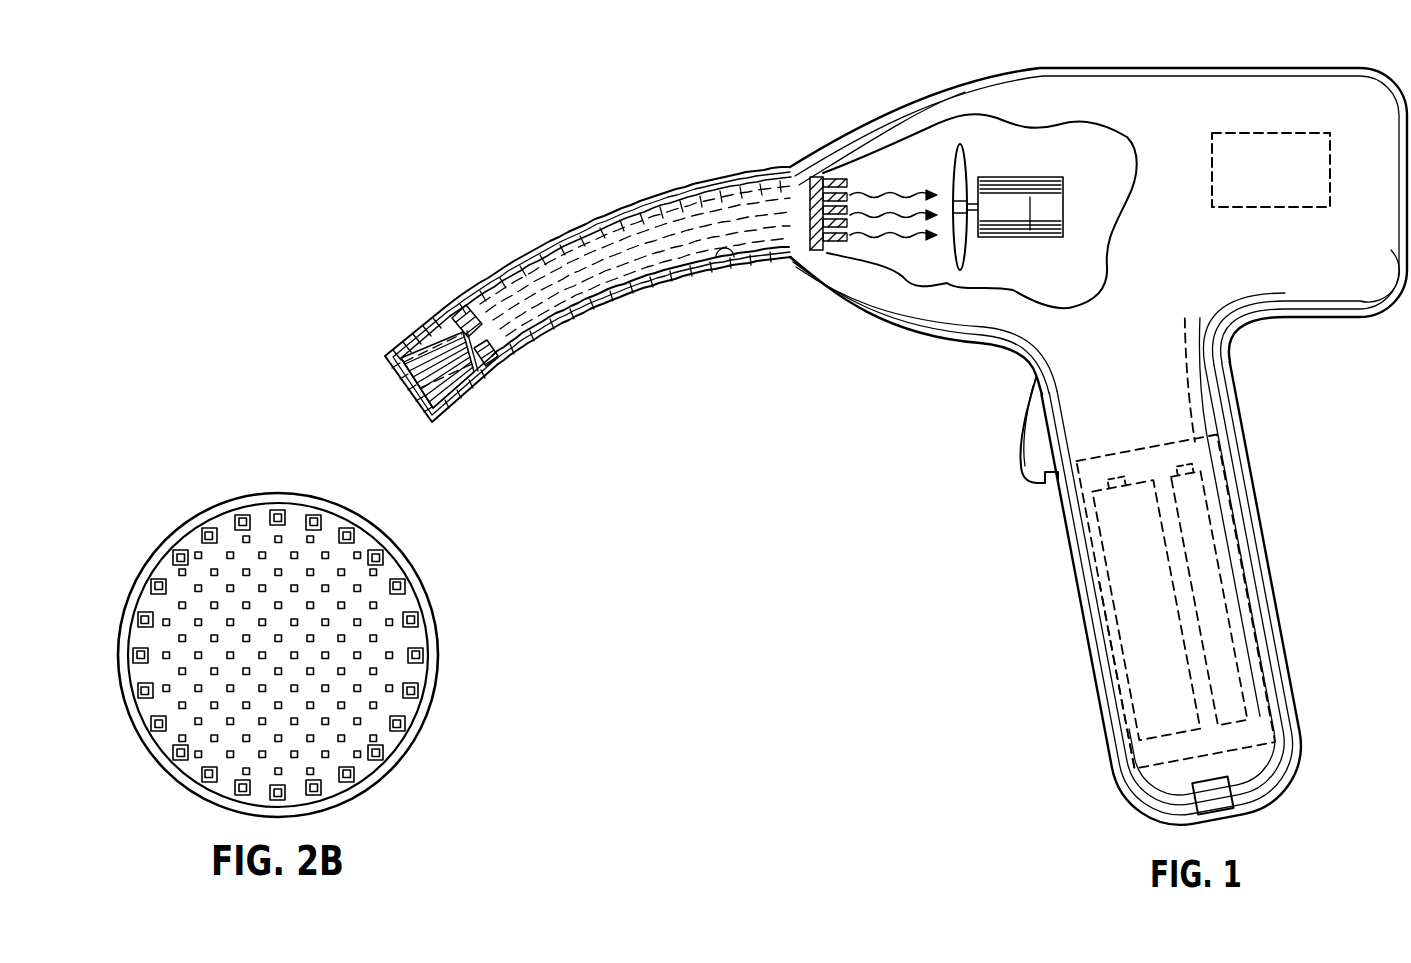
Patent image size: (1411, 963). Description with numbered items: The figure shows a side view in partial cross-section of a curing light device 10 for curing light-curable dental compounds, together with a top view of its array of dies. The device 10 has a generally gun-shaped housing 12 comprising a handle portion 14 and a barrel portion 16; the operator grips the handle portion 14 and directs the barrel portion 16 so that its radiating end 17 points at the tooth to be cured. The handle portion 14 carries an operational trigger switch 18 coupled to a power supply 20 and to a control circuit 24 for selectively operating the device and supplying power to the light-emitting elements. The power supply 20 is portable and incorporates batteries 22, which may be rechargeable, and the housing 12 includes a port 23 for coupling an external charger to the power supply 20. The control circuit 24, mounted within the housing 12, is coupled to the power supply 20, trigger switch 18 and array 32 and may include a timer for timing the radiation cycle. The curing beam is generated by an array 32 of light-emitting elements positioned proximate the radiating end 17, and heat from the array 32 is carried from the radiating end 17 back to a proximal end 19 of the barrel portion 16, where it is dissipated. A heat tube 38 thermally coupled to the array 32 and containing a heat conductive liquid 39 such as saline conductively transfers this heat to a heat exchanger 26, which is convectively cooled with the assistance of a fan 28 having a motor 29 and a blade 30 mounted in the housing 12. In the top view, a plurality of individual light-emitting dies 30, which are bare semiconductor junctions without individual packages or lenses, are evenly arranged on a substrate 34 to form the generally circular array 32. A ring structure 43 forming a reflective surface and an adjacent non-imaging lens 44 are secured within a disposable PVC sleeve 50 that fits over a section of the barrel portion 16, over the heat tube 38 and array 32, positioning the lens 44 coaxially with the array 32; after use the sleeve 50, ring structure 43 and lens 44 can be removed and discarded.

In FIG. 1, the curing light device 10 is at (957, 563).
In FIG. 1, the housing 12 is at (1266, 560).
In FIG. 1, the handle portion 14 is at (1152, 428).
In FIG. 1, the barrel portion 16 is at (770, 146).
In FIG. 1, the radiating end 17 is at (396, 316).
In FIG. 1, the trigger switch 18 is at (1027, 447).
In FIG. 1, the proximal end 19 is at (900, 252).
In FIG. 1, the power supply 20 is at (1117, 672).
In FIG. 1, the batteries 22 is at (1230, 530).
In FIG. 1, the port 23 is at (1216, 799).
In FIG. 1, the control circuit 24 is at (1280, 200).
In FIG. 1, the heat exchanger 26 is at (817, 250).
In FIG. 1, the fan 28 is at (1012, 172).
In FIG. 1, the motor 29 is at (1032, 197).
In FIG. 1, the light-emitting dies 30 is at (961, 178).
In FIG. 2B, the light-emitting dies 30 is at (323, 555).
In FIG. 1, the array of light-emitting elements 32 is at (457, 318).
In FIG. 2B, the array of light-emitting elements 32 is at (190, 518).
In FIG. 2B, the substrate 34 is at (258, 518).
In FIG. 1, the heat tube 38 is at (730, 258).
In FIG. 1, the heat conductive liquid 39 is at (683, 244).
In FIG. 1, the ring structure 43 is at (488, 372).
In FIG. 1, the non-imaging lens 44 is at (413, 381).
In FIG. 1, the disposable sleeve 50 is at (538, 248).